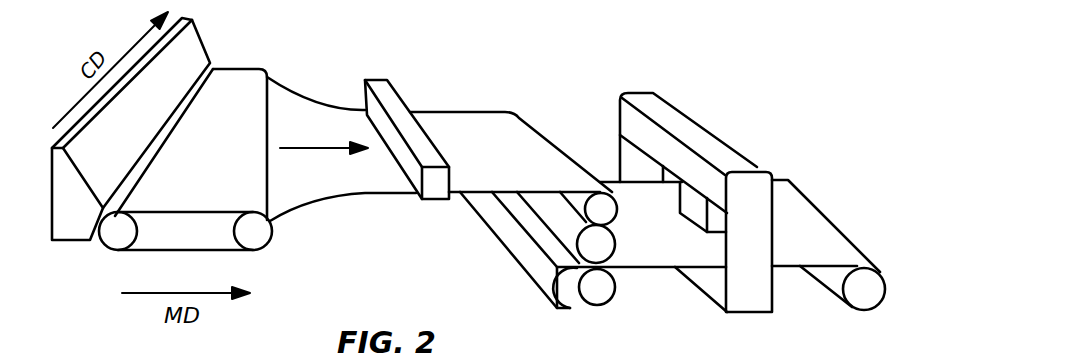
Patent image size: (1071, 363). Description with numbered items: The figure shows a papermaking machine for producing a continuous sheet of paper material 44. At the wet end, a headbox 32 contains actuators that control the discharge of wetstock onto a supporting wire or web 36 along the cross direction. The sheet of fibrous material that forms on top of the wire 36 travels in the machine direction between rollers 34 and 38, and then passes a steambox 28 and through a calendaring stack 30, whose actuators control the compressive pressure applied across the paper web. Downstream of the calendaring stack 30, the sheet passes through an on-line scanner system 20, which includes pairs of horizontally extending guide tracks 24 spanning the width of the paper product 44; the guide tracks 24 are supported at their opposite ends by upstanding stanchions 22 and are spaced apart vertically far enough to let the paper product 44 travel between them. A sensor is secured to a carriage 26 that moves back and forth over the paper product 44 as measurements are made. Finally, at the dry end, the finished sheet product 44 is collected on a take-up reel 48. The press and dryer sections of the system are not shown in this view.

The scanner system 20 is at (727, 140).
The stanchion 22 is at (740, 313).
The guide track 24 is at (642, 132).
The carriage 26 is at (698, 208).
The steambox 28 is at (373, 80).
The calendaring stack 30 is at (596, 304).
The headbox 32 is at (54, 240).
The roller 34 is at (110, 250).
The wire 36 is at (188, 252).
The roller 38 is at (253, 240).
The sheet of paper material 44 is at (805, 205).
The take-up reel 48 is at (853, 312).